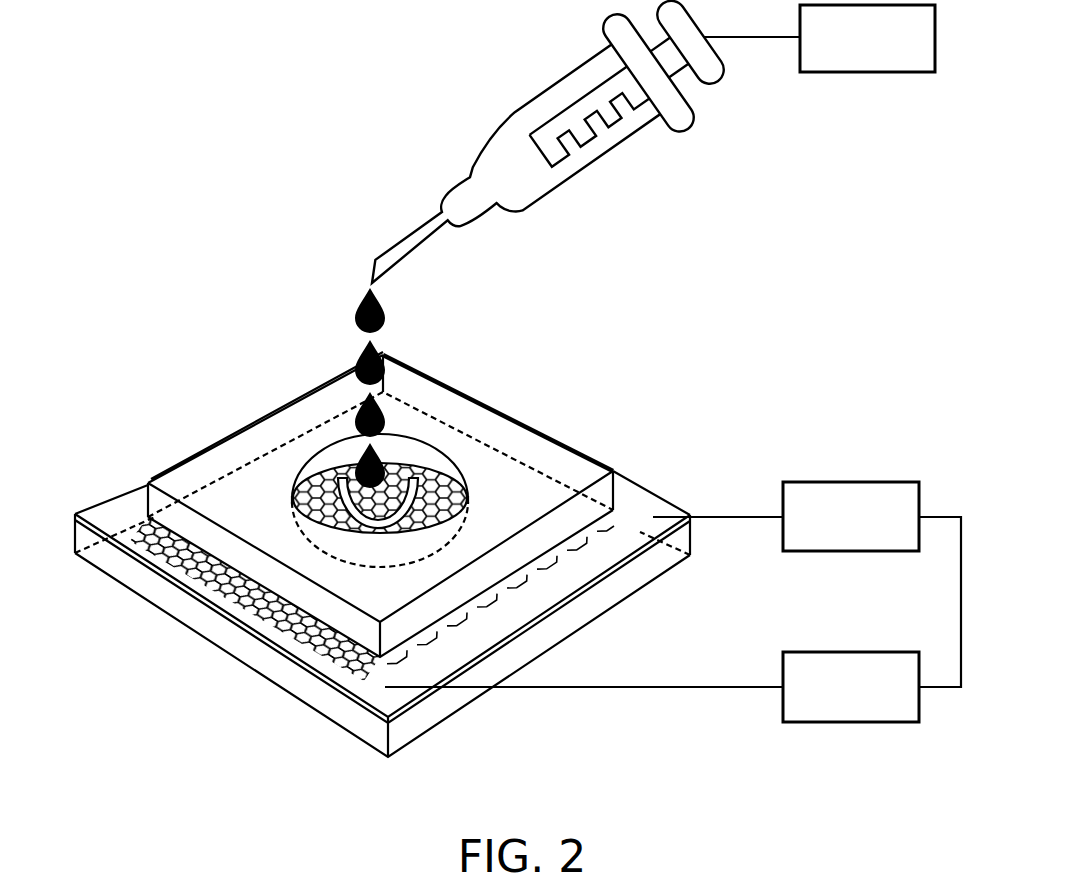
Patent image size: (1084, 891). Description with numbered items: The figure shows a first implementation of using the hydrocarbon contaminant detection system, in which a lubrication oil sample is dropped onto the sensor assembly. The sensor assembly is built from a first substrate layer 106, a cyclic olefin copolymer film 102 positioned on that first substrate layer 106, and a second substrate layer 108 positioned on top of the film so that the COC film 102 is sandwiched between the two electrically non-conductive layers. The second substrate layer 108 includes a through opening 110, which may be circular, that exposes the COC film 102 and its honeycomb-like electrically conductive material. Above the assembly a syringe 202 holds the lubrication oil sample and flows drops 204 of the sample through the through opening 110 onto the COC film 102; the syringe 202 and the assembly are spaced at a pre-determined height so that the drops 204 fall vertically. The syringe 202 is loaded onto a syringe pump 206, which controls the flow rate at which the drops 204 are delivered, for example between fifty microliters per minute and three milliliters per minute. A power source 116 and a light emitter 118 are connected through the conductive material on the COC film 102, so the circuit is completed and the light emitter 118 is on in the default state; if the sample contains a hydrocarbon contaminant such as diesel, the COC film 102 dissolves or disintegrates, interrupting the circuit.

The cyclic olefin copolymer (COC) film 102 is at (433, 493).
The first substrate layer 106 is at (162, 597).
The second substrate layer 108 is at (185, 475).
The through opening 110 is at (373, 460).
The power source 116 is at (874, 701).
The light emitter 118 is at (874, 530).
The syringe 202 is at (517, 115).
The drops 204 is at (360, 305).
The syringe pump 206 is at (890, 53).